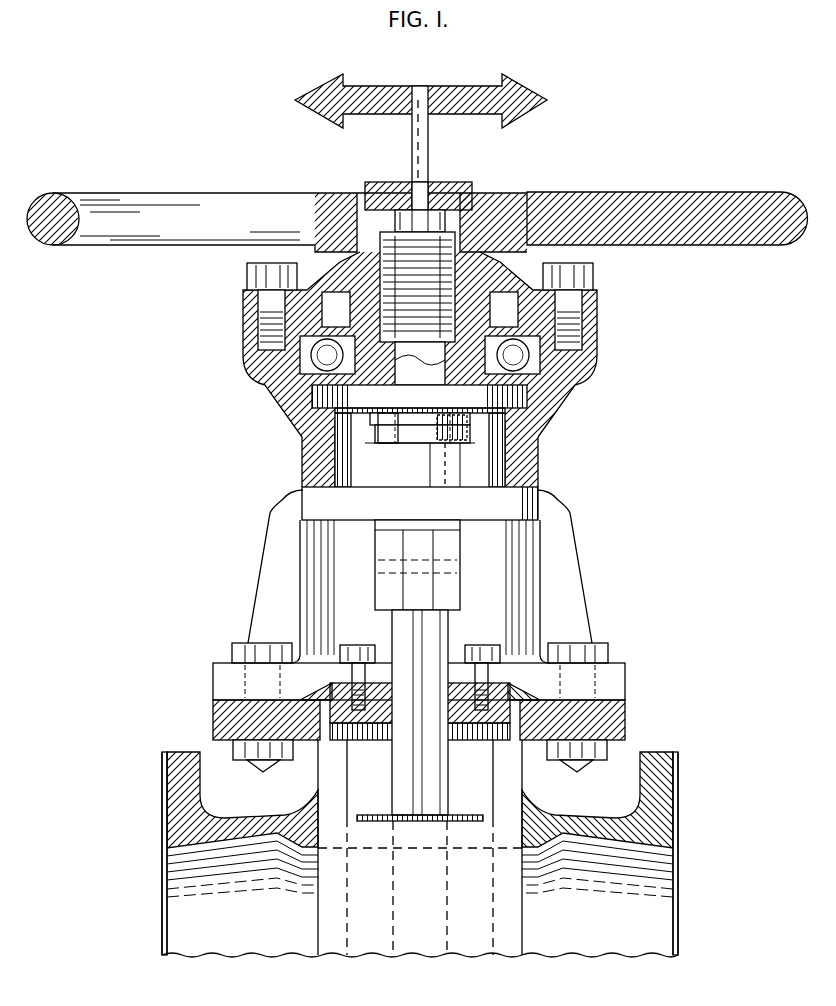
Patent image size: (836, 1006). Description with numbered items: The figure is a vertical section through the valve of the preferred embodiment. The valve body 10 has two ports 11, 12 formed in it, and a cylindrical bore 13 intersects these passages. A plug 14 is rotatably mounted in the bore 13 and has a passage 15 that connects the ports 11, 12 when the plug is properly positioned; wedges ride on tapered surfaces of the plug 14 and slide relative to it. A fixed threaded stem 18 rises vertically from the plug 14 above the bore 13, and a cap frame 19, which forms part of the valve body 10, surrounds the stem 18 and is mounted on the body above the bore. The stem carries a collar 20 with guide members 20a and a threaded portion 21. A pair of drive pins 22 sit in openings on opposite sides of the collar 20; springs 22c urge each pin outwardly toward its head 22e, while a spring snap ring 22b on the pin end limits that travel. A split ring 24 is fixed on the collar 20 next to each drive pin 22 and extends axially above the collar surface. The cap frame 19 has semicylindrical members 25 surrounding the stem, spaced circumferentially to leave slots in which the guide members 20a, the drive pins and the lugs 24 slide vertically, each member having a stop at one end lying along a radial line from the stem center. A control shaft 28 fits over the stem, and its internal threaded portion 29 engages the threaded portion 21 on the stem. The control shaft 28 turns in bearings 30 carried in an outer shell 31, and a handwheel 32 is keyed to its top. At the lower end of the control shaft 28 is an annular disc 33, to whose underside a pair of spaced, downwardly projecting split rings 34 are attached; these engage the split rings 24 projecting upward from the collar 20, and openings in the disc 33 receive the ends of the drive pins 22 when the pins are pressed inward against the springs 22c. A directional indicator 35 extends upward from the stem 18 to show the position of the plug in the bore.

The valve body 10 is at (196, 757).
The port 11 is at (274, 936).
The port 12 is at (626, 936).
The cylindrical bore 13 is at (320, 795).
The plug 14 is at (368, 940).
The passage 15 is at (470, 848).
The threaded stem 18 is at (458, 540).
The cap frame 19 is at (568, 599).
The collar 20 is at (520, 425).
The guide members 20a is at (424, 435).
The threaded portion 21 is at (362, 248).
The drive pins 22 is at (460, 413).
The spring snap ring 22b is at (440, 415).
The springs 22c is at (480, 440).
The head 22e is at (447, 445).
The split ring 24 is at (470, 412).
The semicylindrical members 25 is at (365, 470).
The control shaft 28 is at (468, 225).
The threaded portion 29 is at (480, 247).
The bearings 30 is at (527, 360).
The outer shell 31 is at (597, 303).
The handwheel 32 is at (710, 235).
The annular disc 33 is at (357, 393).
The split rings 34 is at (410, 405).
The directional indicator 35 is at (395, 87).